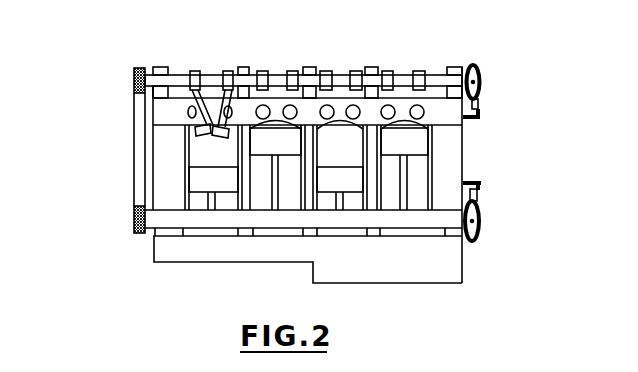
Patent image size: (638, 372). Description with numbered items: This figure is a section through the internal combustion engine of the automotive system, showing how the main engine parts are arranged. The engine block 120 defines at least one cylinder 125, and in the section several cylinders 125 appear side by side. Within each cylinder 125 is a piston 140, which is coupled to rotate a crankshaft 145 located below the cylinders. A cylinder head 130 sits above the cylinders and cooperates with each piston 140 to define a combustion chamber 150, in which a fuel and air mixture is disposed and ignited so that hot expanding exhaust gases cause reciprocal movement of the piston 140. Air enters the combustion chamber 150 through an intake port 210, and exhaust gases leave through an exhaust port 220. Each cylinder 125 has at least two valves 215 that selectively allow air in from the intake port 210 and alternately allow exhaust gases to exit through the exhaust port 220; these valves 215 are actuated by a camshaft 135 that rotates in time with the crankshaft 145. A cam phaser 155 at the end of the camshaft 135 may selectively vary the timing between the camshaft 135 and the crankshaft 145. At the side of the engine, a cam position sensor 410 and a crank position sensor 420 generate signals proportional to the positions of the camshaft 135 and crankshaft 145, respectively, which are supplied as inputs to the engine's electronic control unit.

The engine block 120 is at (155, 168).
The cylinder 125 is at (313, 156).
The cylinder head 130 is at (155, 122).
The camshaft 135 is at (208, 72).
The piston 140 is at (343, 176).
The crankshaft 145 is at (182, 222).
The combustion chamber 150 is at (400, 127).
The cam phaser 155 is at (135, 80).
The intake port 210 is at (332, 100).
The valve 215 is at (214, 131).
The exhaust port 220 is at (284, 105).
The cam position sensor 410 is at (480, 118).
The crank position sensor 420 is at (478, 184).